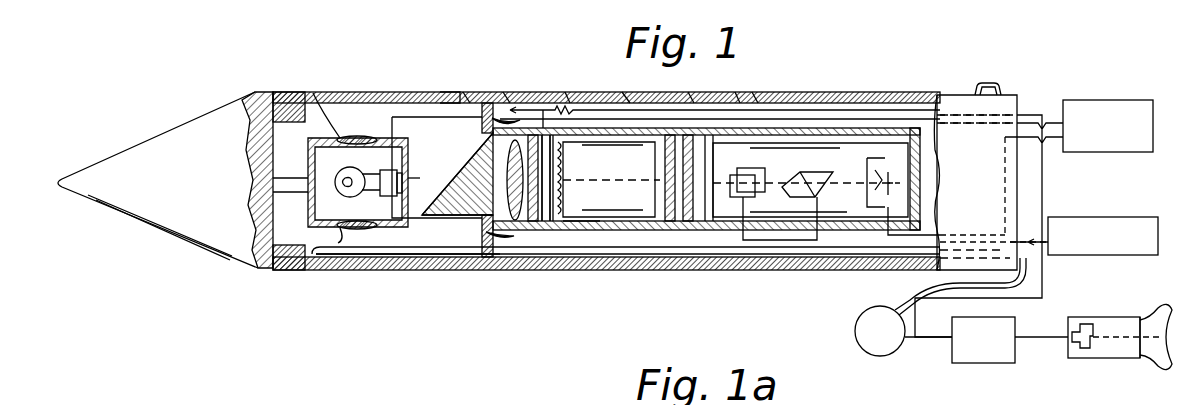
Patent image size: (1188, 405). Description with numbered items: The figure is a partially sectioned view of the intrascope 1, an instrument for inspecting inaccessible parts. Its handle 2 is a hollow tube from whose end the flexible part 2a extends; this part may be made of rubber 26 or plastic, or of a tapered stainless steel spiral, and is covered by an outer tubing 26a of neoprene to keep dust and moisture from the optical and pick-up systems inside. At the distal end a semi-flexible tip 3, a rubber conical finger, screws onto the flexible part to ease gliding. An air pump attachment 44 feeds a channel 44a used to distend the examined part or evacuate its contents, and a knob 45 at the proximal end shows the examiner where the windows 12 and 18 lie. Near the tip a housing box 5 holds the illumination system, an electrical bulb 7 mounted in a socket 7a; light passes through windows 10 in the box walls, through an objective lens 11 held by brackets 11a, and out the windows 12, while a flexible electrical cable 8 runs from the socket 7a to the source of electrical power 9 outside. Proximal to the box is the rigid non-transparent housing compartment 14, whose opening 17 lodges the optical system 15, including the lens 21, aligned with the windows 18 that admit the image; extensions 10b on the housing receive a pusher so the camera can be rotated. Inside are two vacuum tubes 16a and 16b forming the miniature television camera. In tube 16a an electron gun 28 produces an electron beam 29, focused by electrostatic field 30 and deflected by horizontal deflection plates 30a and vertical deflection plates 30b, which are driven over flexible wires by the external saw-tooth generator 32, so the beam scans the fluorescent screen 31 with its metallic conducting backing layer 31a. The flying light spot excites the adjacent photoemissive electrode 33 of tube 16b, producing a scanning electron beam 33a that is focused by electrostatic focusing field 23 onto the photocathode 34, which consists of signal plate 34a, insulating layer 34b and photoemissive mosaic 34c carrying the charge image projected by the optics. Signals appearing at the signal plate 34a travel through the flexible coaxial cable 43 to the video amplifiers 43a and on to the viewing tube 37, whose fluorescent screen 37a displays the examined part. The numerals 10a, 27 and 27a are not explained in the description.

The intrascope 1 is at (565, 92).
The handle 2 is at (960, 93).
The flexible part 2a is at (503, 92).
The semi-flexible tip 3 is at (216, 125).
The housing box 5 is at (372, 131).
The electrical bulb 7 is at (347, 174).
The socket 7a is at (402, 182).
The flexible electrical cable 8 is at (450, 92).
The source of electrical power 9 is at (1106, 152).
The windows 10 is at (313, 92).
The housing wall section 10a is at (463, 92).
The extensions 10b is at (940, 150).
The objective lens 11 is at (349, 240).
The brackets 11a is at (315, 237).
The windows 12 is at (357, 92).
The housing compartment 14 is at (837, 127).
The optical system 15 is at (478, 145).
The vacuum tube 16a is at (868, 205).
The vacuum tube 16b is at (682, 230).
The opening 17 is at (508, 180).
The windows 18 is at (455, 270).
The lens 21 is at (478, 215).
The electrostatic focusing field 23 is at (578, 210).
The rubber 26 is at (688, 92).
The outer tubing 26a is at (622, 92).
The aperture plate 27 is at (486, 125).
The aperture plate 27a is at (486, 257).
The electron gun 28 is at (890, 163).
The electron beam 29 is at (866, 166).
The electrostatic field 30 is at (465, 165).
The horizontal deflection plates 30a is at (756, 168).
The vertical deflection plates 30b is at (812, 172).
The fluorescent screen 31 is at (735, 92).
The metallic conducting backing layer 31a is at (752, 92).
The saw-tooth generator 32 is at (1125, 217).
The photoemissive electrode 33 is at (670, 230).
The scanning electron beam 33a is at (609, 179).
The photocathode 34 is at (545, 230).
The signal plate 34a is at (533, 230).
The insulating layer 34b is at (552, 230).
The photoemissive mosaic 34c is at (570, 230).
The viewing tube 37 is at (1095, 358).
The fluorescent screen 37a is at (1160, 370).
The flexible coaxial cable 43 is at (592, 92).
The video amplifiers 43a is at (1007, 317).
The air pump attachment 44 is at (855, 331).
The channel 44a is at (338, 270).
The knob 45 is at (996, 83).